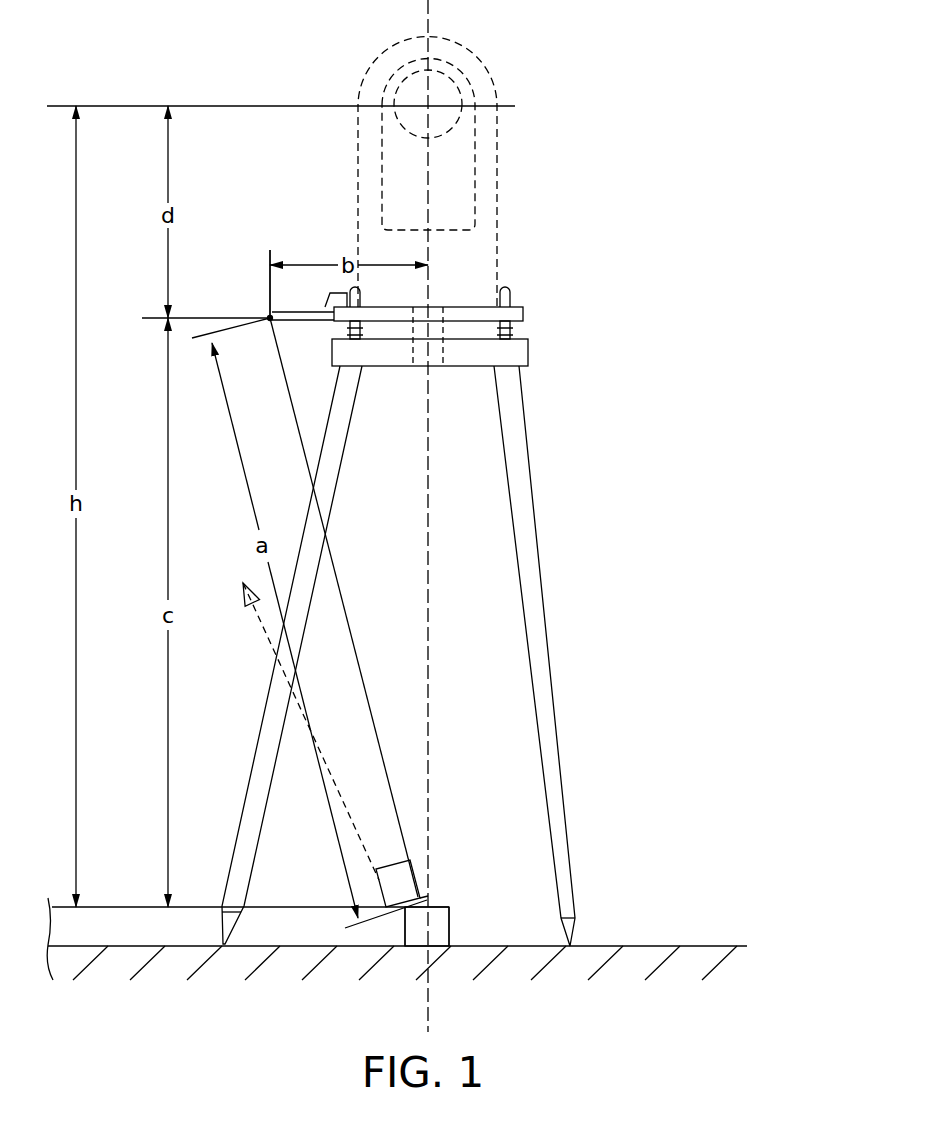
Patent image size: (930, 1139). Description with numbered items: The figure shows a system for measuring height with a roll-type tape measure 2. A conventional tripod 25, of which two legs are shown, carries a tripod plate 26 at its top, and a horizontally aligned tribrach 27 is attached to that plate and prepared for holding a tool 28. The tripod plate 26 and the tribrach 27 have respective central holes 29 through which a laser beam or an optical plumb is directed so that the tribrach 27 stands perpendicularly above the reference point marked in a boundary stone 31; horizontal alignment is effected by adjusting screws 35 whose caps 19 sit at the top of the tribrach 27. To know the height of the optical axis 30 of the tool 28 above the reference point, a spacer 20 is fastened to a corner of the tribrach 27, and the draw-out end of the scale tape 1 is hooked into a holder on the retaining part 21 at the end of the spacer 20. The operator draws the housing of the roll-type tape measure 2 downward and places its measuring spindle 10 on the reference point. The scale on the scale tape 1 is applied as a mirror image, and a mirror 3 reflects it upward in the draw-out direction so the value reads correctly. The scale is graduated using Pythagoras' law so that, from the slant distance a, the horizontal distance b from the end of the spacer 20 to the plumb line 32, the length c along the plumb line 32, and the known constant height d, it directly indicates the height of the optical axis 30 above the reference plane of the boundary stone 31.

The scale tape 1 is at (347, 600).
The roll-type tape measure 2 is at (416, 874).
The mirror 3 is at (377, 872).
The measuring spindle 10 is at (424, 896).
The caps 19 is at (512, 297).
The spacer 20 is at (269, 316).
The retaining part 21 is at (269, 320).
The tripod 25 is at (557, 665).
The tripod plate 26 is at (467, 360).
The tribrach 27 is at (524, 316).
The tool 28 is at (498, 250).
The central holes 29 is at (433, 306).
The optical axis 30 is at (429, 112).
The boundary stone 31 is at (447, 927).
The plumb line 32 is at (429, 578).
The adjusting screws 35 is at (507, 339).